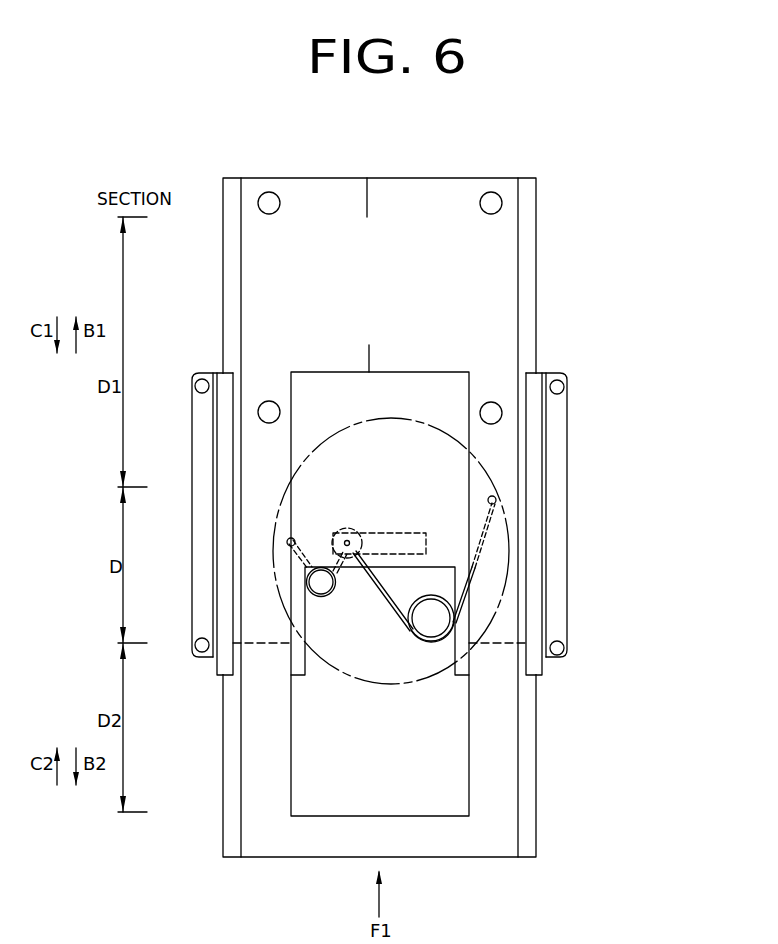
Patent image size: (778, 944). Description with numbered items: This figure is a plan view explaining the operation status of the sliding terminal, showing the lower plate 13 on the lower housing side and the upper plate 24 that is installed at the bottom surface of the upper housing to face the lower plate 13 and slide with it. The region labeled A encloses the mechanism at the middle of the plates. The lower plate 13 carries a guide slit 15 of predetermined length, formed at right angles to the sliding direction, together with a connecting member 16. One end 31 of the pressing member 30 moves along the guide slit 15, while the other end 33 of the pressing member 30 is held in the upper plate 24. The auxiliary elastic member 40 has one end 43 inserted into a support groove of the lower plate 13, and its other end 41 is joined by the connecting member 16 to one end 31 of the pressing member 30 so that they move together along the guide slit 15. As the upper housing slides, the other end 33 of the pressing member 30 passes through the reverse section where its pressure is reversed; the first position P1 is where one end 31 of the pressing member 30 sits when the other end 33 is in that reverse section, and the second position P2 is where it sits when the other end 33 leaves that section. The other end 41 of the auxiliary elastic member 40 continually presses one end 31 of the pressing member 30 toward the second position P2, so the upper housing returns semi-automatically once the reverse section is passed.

The upper plate 24 is at (499, 317).
The lower plate 13 is at (557, 434).
The detail region A is at (441, 551).
The auxiliary elastic member 40 is at (323, 597).
The pressing member 30 is at (467, 597).
The one end of the auxiliary elastic member 43 is at (288, 541).
The other end of the auxiliary elastic member 41 is at (333, 543).
The one end of the pressing member 31 is at (340, 530).
The guide slit 15 is at (426, 543).
The first position P1 is at (354, 516).
The second position P2 is at (417, 516).
The connecting member 16 is at (353, 565).
The other end of the pressing member 33 is at (496, 502).